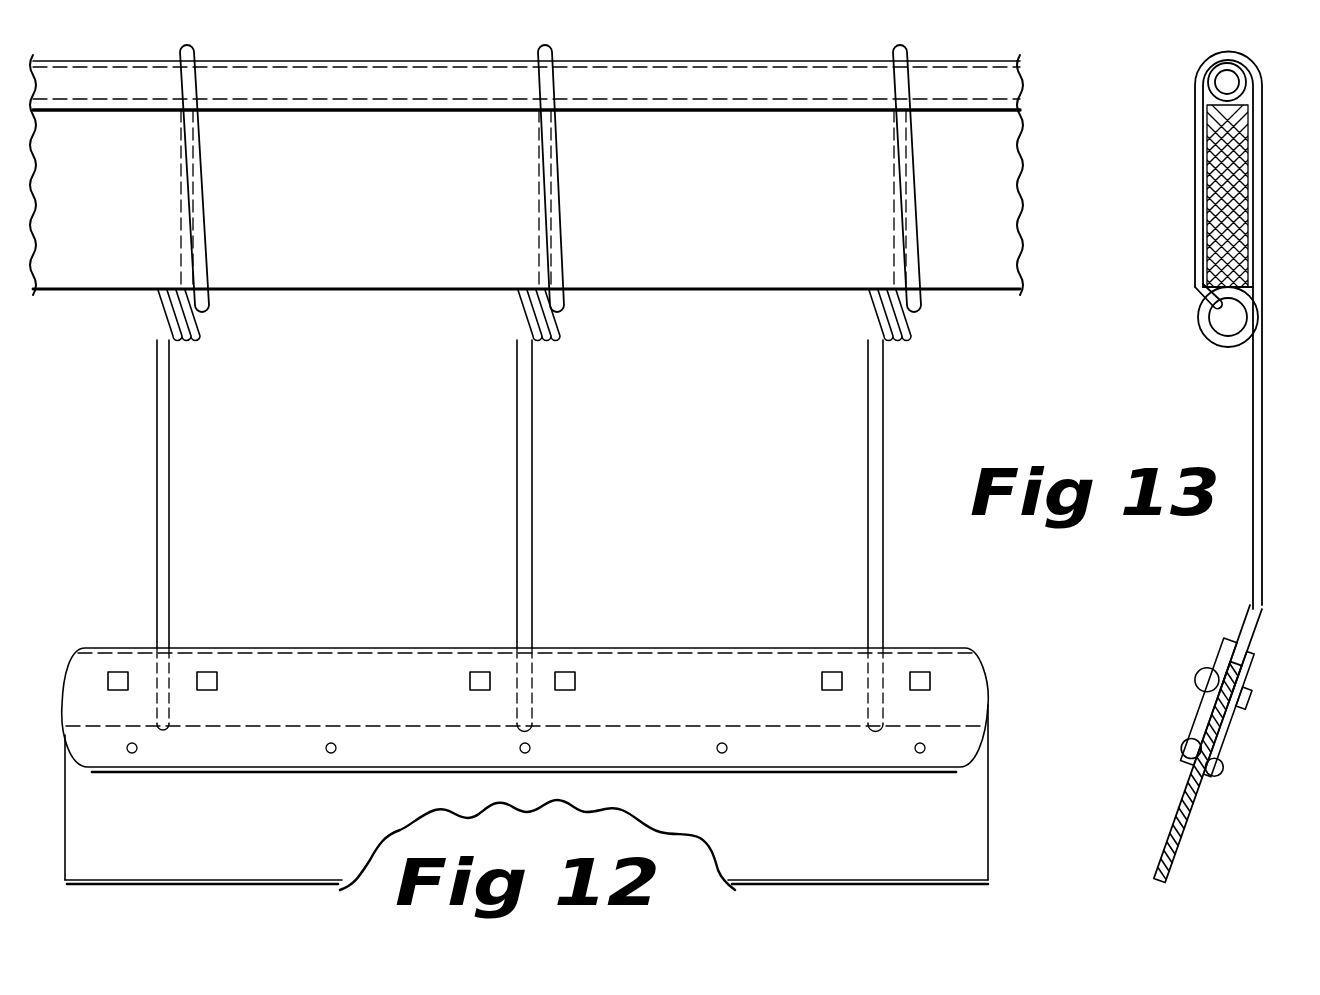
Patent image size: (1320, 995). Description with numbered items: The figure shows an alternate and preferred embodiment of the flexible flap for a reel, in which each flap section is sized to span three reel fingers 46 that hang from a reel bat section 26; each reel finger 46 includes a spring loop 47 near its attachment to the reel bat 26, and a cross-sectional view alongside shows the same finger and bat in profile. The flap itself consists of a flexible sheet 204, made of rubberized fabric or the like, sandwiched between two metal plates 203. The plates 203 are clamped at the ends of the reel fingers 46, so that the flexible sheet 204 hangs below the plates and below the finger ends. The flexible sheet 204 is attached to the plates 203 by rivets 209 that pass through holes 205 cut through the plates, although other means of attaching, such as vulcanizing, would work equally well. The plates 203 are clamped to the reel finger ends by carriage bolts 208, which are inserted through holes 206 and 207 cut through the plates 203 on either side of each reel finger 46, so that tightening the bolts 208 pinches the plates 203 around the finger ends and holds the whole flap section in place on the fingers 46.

In FIG. 12, the reel bat section 26 is at (670, 292).
In FIG. 13, the reel bat section 26 is at (1243, 173).
In FIG. 12, the reel finger 46 is at (530, 505).
In FIG. 13, the reel finger 46 is at (1264, 440).
In FIG. 13, the spring loop 47 is at (1212, 342).
In FIG. 12, the metal plate 203 is at (985, 690).
In FIG. 12, the flexible sheet 204 is at (985, 810).
In FIG. 13, the flexible sheet 204 is at (1168, 828).
In FIG. 12, the hole 205 is at (532, 747).
In FIG. 12, the hole 206 is at (577, 681).
In FIG. 12, the hole 207 is at (468, 681).
In FIG. 13, the carriage bolt 208 is at (1208, 676).
In FIG. 13, the rivet 209 is at (1186, 747).